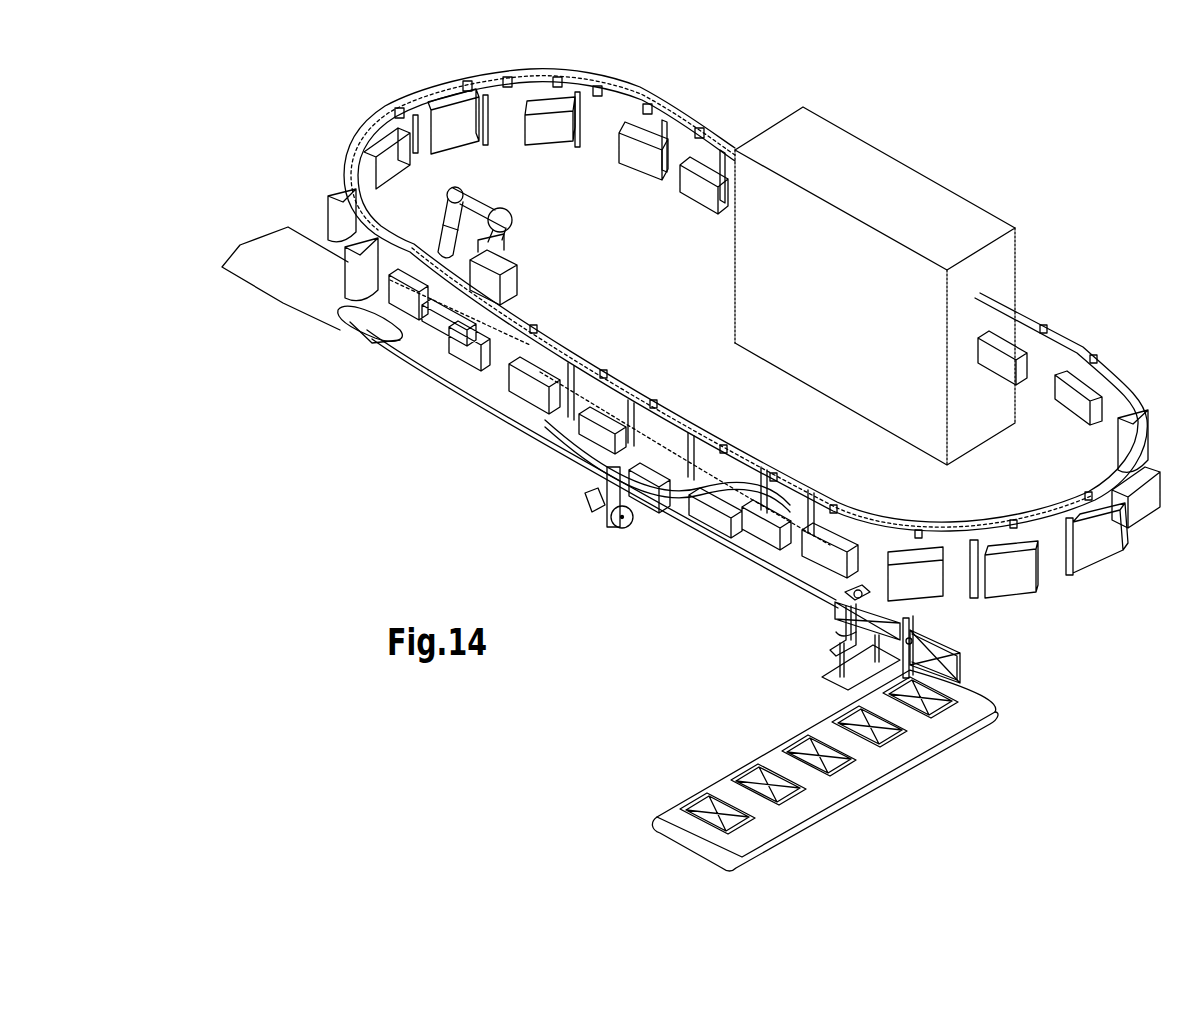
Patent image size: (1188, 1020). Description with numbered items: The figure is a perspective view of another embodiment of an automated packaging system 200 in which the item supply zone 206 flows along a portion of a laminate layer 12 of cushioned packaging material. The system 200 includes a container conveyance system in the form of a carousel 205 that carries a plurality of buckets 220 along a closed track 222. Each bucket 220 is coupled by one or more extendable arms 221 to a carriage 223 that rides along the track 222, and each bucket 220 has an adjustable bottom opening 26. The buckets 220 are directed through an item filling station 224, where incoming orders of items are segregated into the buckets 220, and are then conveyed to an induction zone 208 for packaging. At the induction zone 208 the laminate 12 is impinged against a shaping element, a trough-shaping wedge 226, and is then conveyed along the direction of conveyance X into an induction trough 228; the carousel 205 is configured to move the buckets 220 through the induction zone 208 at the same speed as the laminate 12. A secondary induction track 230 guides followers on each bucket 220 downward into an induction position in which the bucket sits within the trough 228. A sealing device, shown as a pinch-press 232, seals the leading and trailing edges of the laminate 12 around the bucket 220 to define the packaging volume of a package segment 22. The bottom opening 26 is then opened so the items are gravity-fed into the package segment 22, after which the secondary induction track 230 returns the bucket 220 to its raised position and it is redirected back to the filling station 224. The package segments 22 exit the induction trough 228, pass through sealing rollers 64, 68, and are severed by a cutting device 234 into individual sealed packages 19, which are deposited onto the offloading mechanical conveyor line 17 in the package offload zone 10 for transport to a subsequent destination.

The automated packaging system 200 is at (288, 126).
The carousel 205 is at (516, 67).
The track 222 is at (444, 84).
The buckets 220 is at (635, 147).
The bottom opening 26 is at (693, 200).
The item supply zone 206 is at (558, 36).
The item filling station 224 is at (842, 293).
The laminate layer 12 is at (284, 266).
The direction of conveyance X is at (238, 236).
The trough-shaping wedge 226 is at (372, 325).
The induction trough 228 is at (445, 382).
The secondary induction track 230 is at (550, 425).
The pinch-press 232 is at (592, 512).
The extendable arms 221 is at (578, 388).
The carriage 223 is at (618, 388).
The induction zone 208 is at (728, 672).
The package segment 22 is at (757, 543).
The sealing roller 64 is at (853, 600).
The sealing roller 68 is at (853, 627).
The cutting device 234 is at (912, 662).
The packages 19 is at (948, 667).
The mechanical conveyor line 17 is at (917, 730).
The package offload zone 10 is at (751, 889).